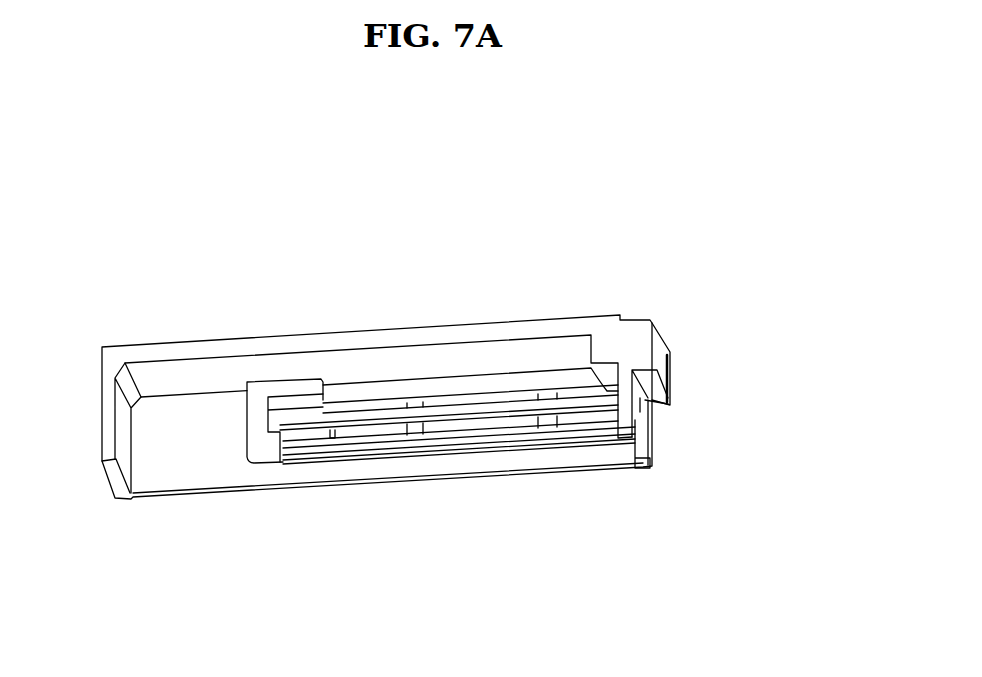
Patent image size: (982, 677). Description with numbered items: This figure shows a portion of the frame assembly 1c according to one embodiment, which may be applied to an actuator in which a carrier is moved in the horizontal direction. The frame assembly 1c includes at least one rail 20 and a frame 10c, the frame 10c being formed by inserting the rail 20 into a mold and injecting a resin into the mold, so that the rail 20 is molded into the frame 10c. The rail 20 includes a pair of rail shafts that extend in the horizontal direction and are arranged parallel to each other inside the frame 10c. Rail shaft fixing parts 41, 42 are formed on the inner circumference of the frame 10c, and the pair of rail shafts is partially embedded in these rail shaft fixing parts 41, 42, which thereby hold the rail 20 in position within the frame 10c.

The frame assembly 1c is at (70, 203).
The frame 10c is at (397, 335).
The rail 20 is at (813, 275).
The rail shaft fixing part 41 is at (413, 433).
The rail shaft fixing part 42 is at (550, 423).